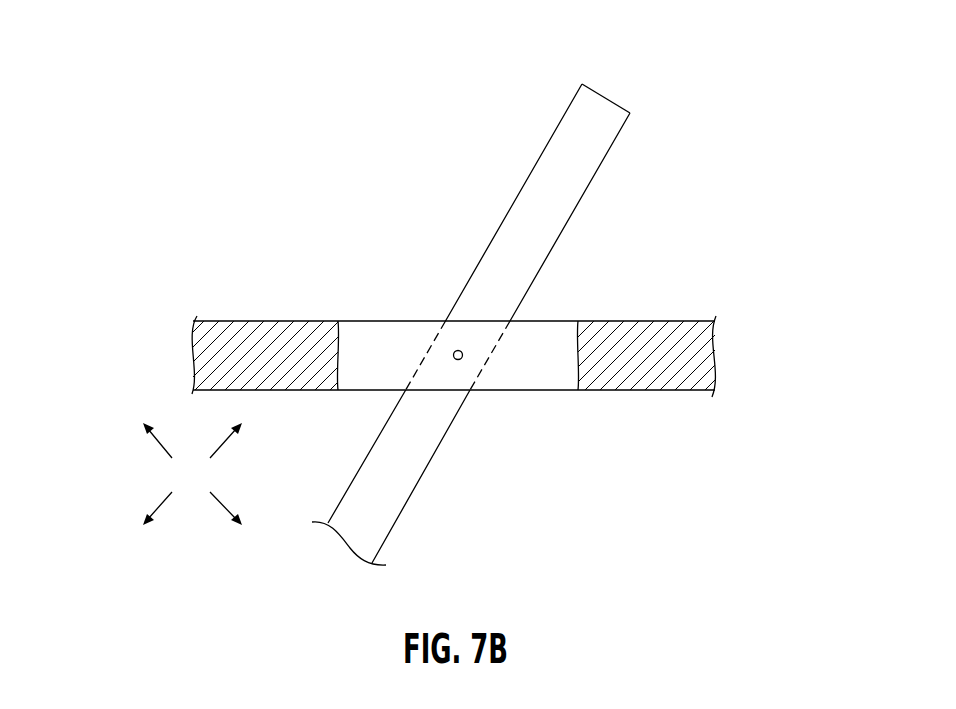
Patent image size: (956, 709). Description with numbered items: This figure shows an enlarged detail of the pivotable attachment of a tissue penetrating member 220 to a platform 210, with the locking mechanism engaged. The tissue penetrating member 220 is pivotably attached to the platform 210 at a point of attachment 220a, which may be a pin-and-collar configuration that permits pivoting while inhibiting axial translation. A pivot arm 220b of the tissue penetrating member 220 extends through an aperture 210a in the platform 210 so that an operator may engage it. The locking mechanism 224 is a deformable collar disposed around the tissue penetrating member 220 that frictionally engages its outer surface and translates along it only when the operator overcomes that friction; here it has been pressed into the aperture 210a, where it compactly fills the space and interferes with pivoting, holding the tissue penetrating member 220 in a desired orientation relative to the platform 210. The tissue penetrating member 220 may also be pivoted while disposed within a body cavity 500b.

The platform 210 is at (195, 355).
The aperture 210a is at (586, 324).
The locking mechanism 224 is at (393, 320).
The tissue penetrating member 220 is at (366, 455).
The point of attachment 220a is at (463, 355).
The pivot arm 220b is at (610, 100).
The body cavity 500b is at (192, 474).